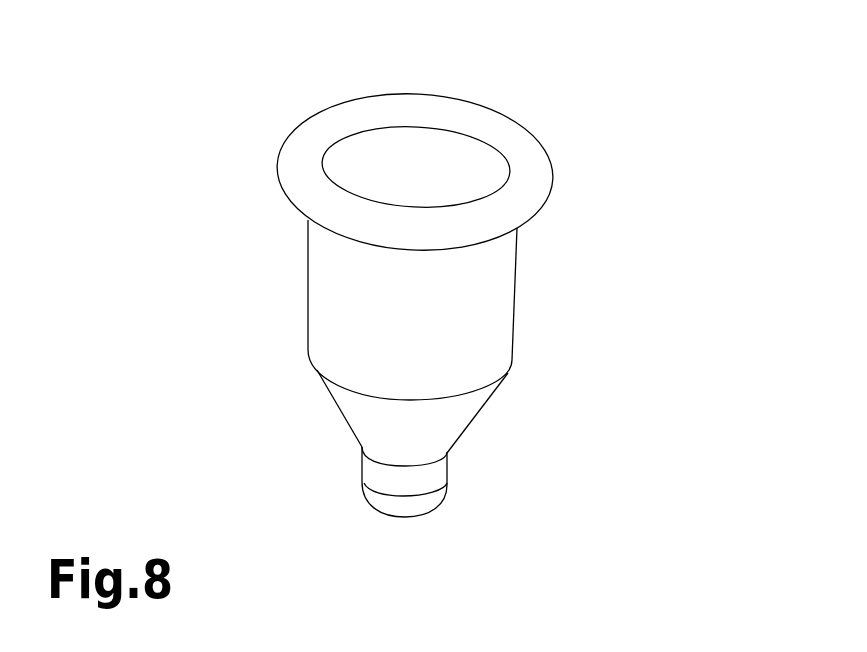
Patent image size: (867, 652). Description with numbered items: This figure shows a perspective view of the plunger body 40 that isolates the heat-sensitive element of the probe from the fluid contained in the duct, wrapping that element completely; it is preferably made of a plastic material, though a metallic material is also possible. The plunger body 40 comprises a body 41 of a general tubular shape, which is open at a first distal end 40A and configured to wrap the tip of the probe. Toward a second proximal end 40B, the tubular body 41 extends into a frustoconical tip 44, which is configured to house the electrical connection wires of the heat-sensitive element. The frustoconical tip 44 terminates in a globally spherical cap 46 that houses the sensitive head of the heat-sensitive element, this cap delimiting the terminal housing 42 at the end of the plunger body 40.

The plunger body 40 is at (616, 283).
The first distal end 40A is at (502, 143).
The second proximal end 40B is at (447, 460).
The tubular body 41 is at (337, 297).
The terminal housing 42 is at (263, 417).
The frustoconical tip 44 is at (382, 430).
The spherical cap 46 is at (412, 507).